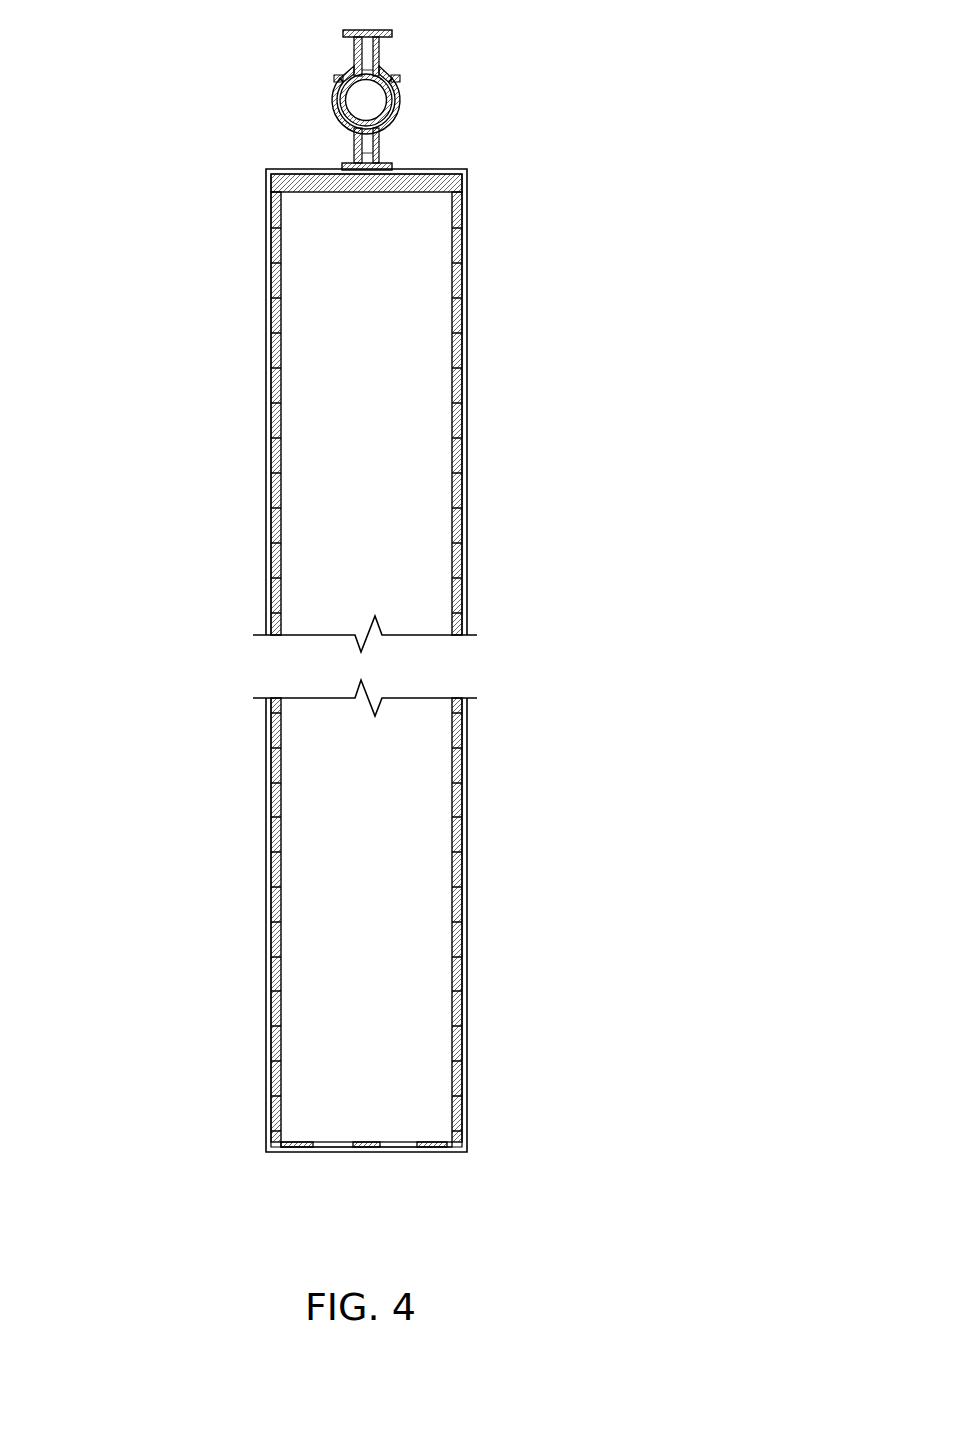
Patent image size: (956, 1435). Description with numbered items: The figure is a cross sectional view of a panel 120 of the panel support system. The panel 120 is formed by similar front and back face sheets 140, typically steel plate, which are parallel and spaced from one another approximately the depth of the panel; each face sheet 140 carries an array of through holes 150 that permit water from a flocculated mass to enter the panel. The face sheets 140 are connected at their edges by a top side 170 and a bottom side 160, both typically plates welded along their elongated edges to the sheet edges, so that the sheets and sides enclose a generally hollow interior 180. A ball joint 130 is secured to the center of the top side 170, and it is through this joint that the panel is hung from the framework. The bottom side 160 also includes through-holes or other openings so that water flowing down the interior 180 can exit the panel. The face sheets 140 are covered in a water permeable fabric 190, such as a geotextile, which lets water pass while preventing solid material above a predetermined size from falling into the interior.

The panel 120 is at (438, 613).
The ball joint 130 is at (412, 83).
The front and back face sheets 140 is at (452, 317).
The through holes 150 is at (273, 397).
The bottom side 160 is at (397, 1147).
The top side 170 is at (455, 182).
The hollow interior 180 is at (383, 878).
The water permeable fabric 190 is at (467, 333).